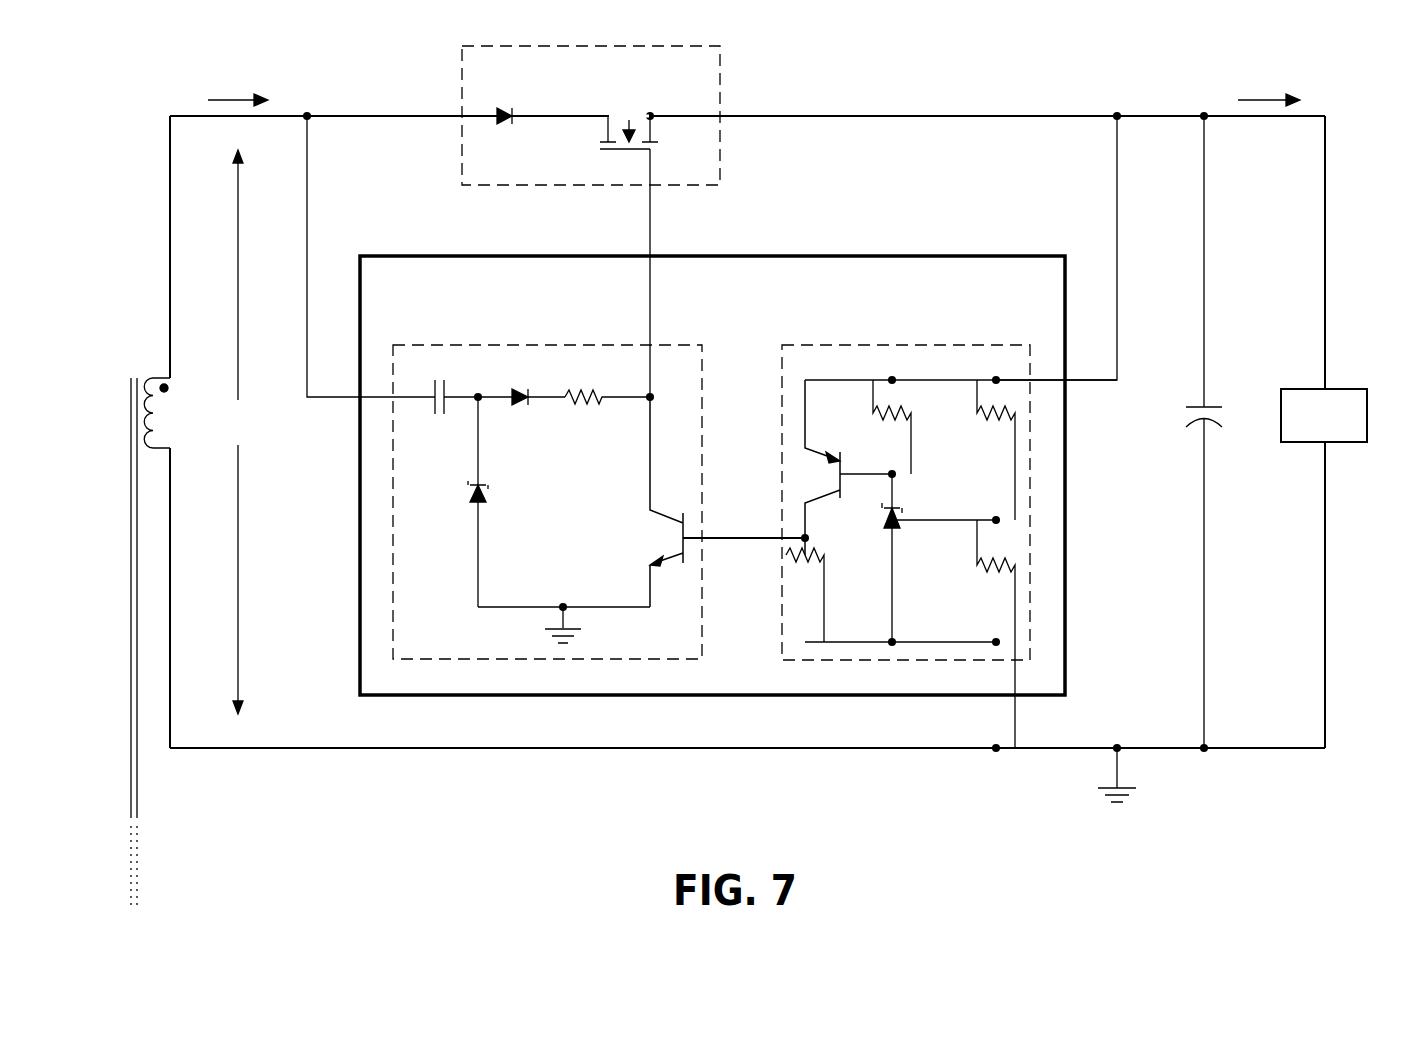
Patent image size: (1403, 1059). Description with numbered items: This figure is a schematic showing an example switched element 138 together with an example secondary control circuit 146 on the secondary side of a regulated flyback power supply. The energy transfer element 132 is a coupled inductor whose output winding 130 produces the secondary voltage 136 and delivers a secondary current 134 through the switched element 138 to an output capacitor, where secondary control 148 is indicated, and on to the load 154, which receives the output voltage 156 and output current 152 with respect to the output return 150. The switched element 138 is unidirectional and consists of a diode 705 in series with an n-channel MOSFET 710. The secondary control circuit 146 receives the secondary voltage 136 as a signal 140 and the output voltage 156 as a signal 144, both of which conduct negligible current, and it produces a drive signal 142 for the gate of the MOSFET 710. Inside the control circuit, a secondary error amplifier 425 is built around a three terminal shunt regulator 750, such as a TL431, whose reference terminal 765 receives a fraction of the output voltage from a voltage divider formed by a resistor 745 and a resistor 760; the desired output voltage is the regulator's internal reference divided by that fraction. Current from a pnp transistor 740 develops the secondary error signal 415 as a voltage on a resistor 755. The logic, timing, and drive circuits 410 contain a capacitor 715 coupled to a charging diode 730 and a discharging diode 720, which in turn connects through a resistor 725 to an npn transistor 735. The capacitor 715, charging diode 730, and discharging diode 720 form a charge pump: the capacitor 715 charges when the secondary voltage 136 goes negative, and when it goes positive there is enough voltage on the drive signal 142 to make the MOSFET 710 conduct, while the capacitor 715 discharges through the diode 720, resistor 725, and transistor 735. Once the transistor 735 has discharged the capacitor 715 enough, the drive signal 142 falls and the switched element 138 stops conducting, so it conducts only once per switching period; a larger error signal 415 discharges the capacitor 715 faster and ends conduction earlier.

The output winding 130 is at (164, 432).
The energy transfer element 132 is at (143, 798).
The secondary current 134 is at (217, 92).
The secondary voltage 136 is at (250, 440).
The switched element 138 is at (592, 44).
The signal 140 is at (308, 226).
The drive signal 142 is at (654, 206).
The signal 144 is at (1118, 210).
The secondary control circuit 146 is at (458, 256).
The secondary control 148 is at (1190, 430).
The output return 150 is at (1134, 766).
The output current 152 is at (1250, 92).
The load 154 is at (1332, 388).
The output voltage 156 is at (1250, 436).
The logic, timing, and drive circuits 410 is at (548, 344).
The secondary error signal 415 is at (750, 542).
The secondary error amplifier 425 is at (894, 344).
The diode 705 is at (500, 132).
The n-channel MOSFET 710 is at (630, 118).
The capacitor 715 is at (432, 428).
The discharging diode 720 is at (512, 410).
The resistor 725 is at (582, 410).
The charging diode 730 is at (492, 488).
The npn transistor 735 is at (652, 534).
The pnp transistor 740 is at (820, 450).
The resistor 745 is at (982, 440).
The three terminal shunt regulator 750 is at (886, 524).
The resistor 755 is at (822, 570).
The resistor 760 is at (976, 590).
The reference terminal 765 is at (950, 528).